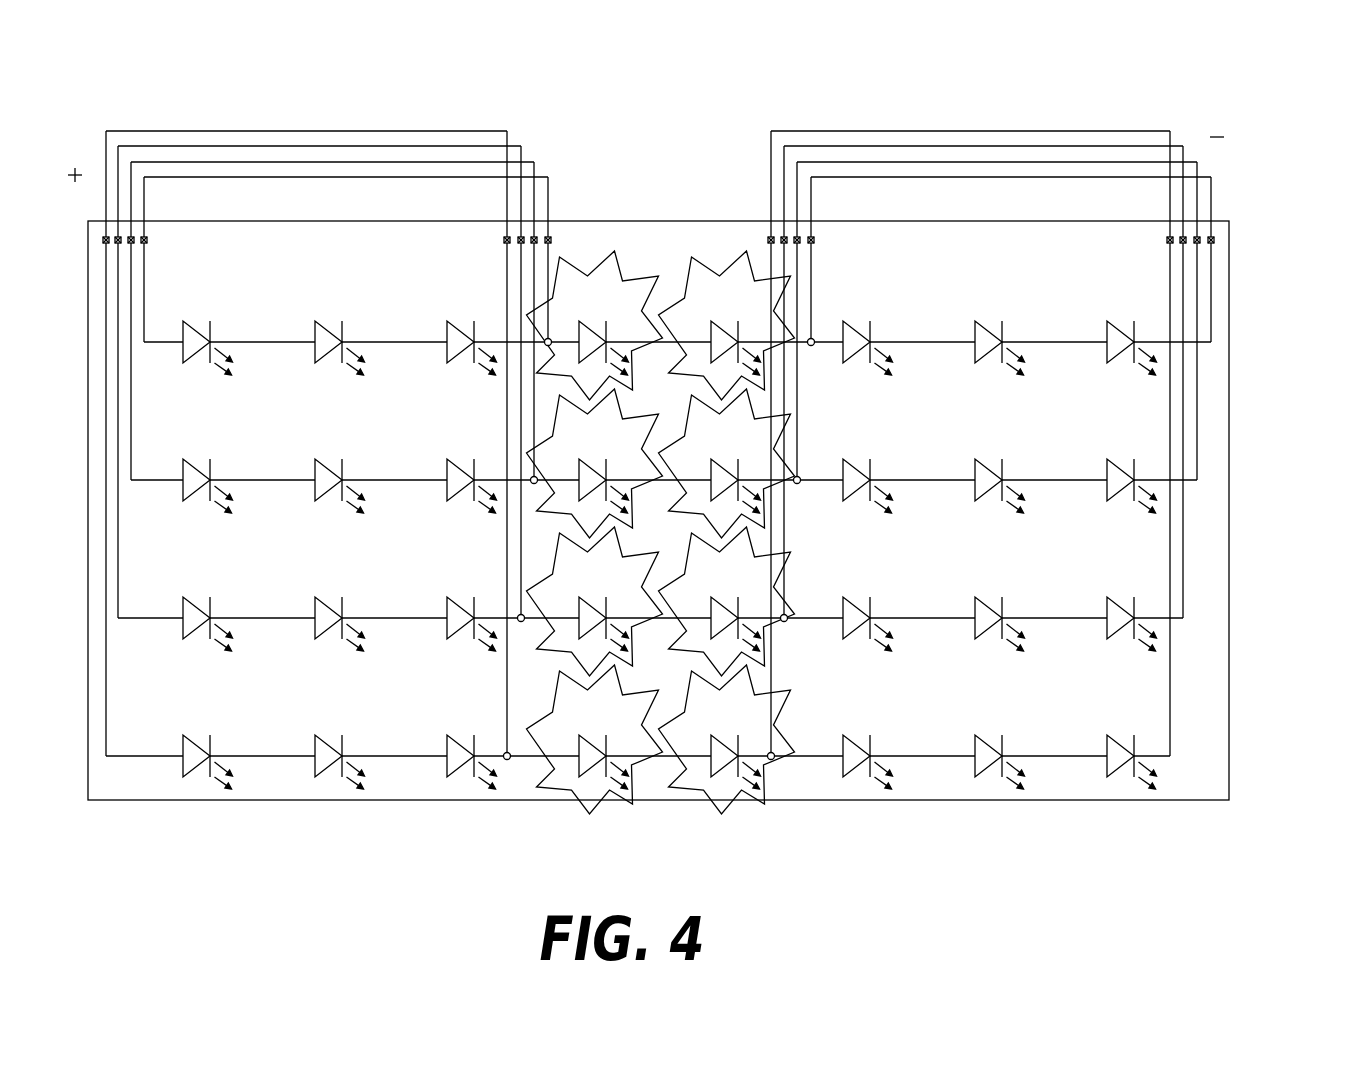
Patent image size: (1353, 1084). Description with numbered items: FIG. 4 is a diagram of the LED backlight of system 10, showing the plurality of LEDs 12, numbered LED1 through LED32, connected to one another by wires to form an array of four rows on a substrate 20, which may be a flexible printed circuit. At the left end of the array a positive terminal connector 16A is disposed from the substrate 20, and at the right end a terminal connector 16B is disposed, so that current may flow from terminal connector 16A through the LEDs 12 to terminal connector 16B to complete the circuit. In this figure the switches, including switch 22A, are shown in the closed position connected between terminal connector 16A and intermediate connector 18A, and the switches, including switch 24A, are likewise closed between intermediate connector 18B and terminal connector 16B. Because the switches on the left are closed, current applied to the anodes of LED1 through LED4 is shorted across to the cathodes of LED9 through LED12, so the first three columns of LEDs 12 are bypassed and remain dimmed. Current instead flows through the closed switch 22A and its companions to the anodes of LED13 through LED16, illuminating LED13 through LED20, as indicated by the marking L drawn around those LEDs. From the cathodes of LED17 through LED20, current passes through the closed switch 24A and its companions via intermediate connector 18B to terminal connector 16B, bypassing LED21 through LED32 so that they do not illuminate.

The system 10 is at (703, 456).
The LEDs 12 is at (658, 519).
The terminal connector 16A is at (100, 210).
The terminal connector 16B is at (1222, 205).
The intermediate connector 18A is at (558, 208).
The intermediate connector 18B is at (753, 208).
The substrate 20 is at (1229, 517).
The switch 22A is at (253, 130).
The switch 24A is at (942, 130).
The illumination indicator L is at (613, 251).